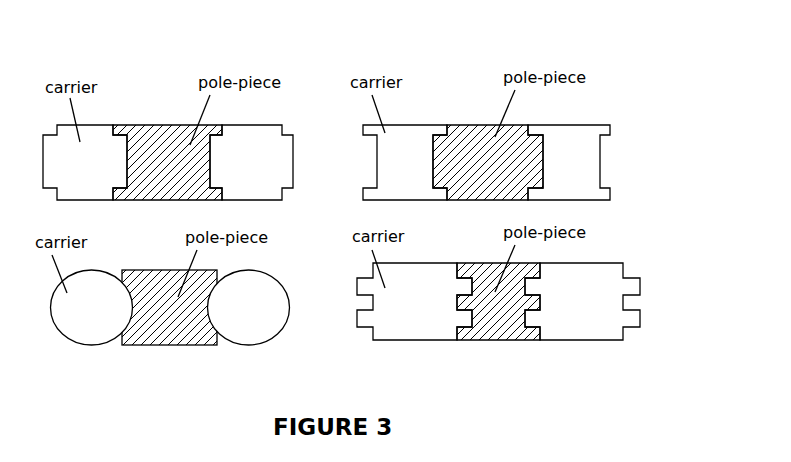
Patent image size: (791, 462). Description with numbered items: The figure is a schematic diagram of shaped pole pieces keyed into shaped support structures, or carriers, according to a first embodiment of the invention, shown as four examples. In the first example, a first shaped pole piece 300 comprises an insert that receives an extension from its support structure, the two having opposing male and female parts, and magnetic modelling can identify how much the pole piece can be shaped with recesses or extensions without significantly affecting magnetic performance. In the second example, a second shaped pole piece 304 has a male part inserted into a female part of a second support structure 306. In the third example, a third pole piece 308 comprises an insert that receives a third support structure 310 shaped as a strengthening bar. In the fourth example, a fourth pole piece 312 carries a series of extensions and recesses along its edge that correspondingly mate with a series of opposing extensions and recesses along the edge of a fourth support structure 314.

The first shaped pole piece 300 is at (178, 132).
The second shaped pole piece 304 is at (476, 137).
The second support structure 306 is at (429, 134).
The third pole piece 308 is at (212, 357).
The third support structure 310 is at (105, 339).
The fourth pole piece 312 is at (517, 338).
The fourth support structure 314 is at (616, 332).